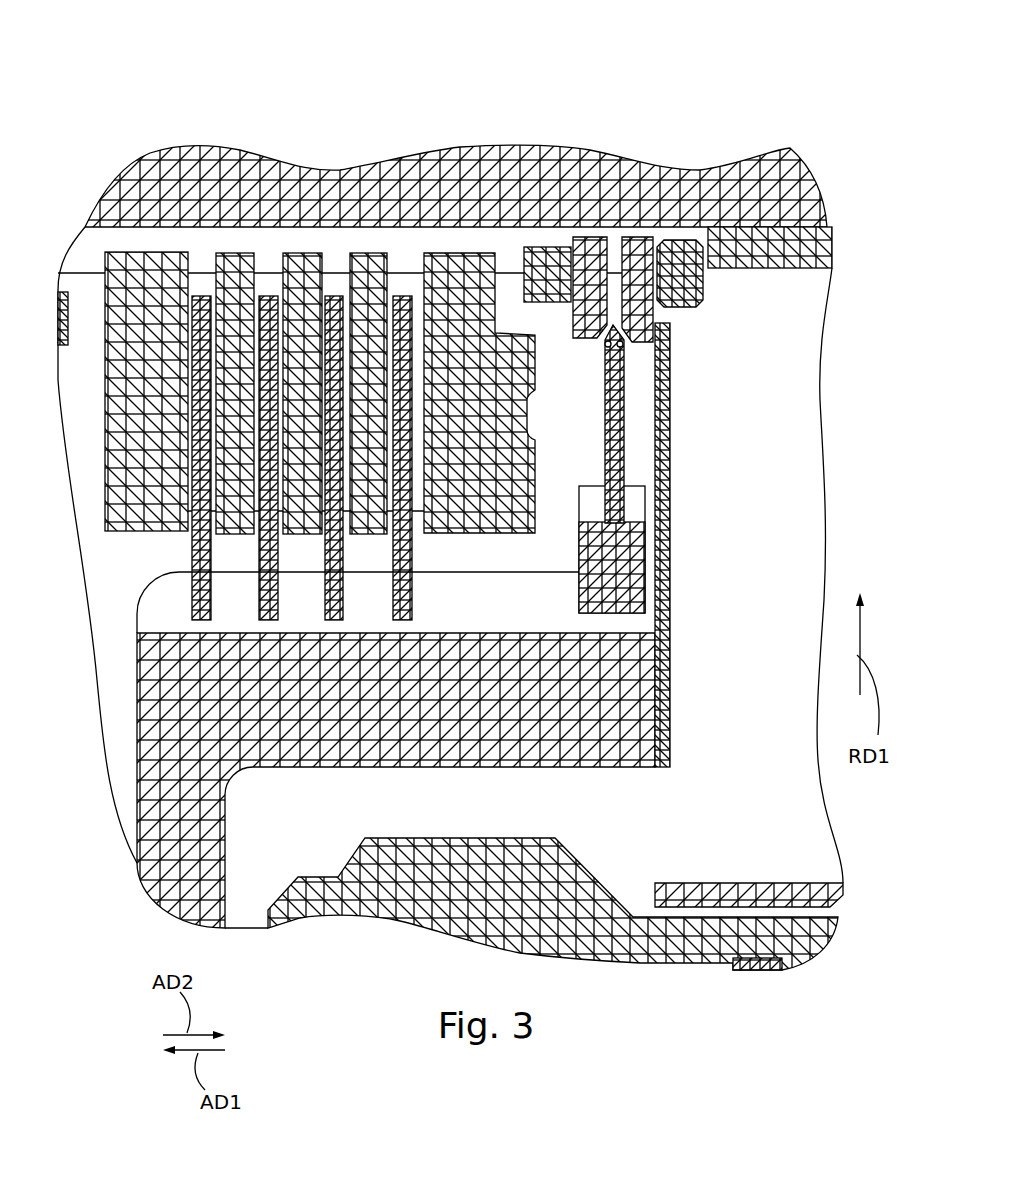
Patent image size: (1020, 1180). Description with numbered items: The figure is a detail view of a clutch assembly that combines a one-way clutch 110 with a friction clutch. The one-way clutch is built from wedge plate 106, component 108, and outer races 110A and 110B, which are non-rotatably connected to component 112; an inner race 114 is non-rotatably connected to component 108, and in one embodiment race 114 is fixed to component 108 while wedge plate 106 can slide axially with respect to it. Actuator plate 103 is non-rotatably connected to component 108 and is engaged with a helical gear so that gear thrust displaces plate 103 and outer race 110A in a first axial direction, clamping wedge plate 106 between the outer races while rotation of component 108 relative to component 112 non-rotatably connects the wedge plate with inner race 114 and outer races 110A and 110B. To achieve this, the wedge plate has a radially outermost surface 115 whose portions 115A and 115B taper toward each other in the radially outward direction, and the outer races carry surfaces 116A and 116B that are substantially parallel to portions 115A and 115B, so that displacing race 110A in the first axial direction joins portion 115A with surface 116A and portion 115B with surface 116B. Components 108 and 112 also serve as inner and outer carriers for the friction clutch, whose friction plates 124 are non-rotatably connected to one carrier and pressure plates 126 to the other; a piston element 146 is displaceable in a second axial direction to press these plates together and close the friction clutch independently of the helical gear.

The actuator plate 103 is at (672, 727).
The wedge plate 106 is at (633, 510).
The component 108 is at (530, 612).
The one-way clutch 110 is at (622, 210).
The outer race 110A is at (658, 248).
The outer race 110B is at (587, 250).
The component 112 is at (277, 243).
The inner race 114 is at (615, 448).
The radially outermost surface 115 is at (628, 360).
The portion 115A is at (621, 347).
The portion 115B is at (607, 347).
The surface 116A is at (648, 322).
The surface 116B is at (603, 332).
The friction plates 124 is at (203, 300).
The pressure plates 126 is at (232, 252).
The piston element 146 is at (68, 322).